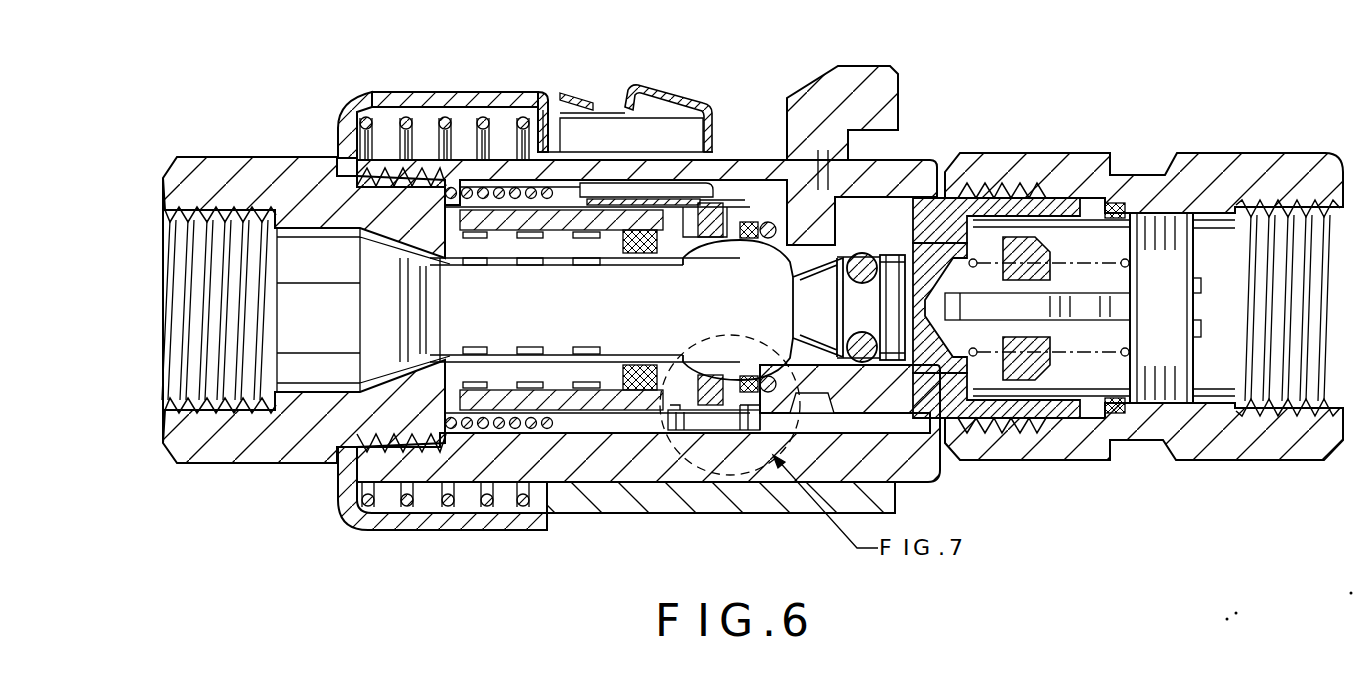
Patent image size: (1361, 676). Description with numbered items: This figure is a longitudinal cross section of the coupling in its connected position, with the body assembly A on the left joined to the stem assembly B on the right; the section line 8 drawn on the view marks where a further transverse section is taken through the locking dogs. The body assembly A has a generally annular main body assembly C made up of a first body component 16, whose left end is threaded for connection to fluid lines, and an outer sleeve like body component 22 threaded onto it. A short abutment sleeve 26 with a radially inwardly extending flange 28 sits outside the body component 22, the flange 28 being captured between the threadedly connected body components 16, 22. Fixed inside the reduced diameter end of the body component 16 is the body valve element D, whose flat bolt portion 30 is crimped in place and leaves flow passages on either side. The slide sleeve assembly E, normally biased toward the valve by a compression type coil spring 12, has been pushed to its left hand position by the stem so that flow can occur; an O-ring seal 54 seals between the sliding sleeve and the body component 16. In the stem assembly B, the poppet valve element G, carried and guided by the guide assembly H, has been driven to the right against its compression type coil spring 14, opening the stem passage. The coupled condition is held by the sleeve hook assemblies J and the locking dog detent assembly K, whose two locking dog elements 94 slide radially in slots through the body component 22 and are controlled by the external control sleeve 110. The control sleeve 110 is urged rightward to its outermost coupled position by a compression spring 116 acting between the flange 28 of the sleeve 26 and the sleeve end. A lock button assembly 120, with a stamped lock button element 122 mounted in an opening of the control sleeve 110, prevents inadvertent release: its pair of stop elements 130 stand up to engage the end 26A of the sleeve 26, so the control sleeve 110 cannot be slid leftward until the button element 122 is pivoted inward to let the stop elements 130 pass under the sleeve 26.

The first body component 16 is at (235, 442).
The bolt portion 30 is at (450, 305).
The body assembly A is at (429, 91).
The radially inwardly extending flange 28 is at (345, 138).
The abutment sleeve 26 is at (447, 92).
The end of sleeve 26A is at (550, 97).
The compression spring 116 is at (410, 123).
The main body assembly C is at (326, 473).
The outer sleeve like body component 22 is at (903, 467).
The external control sleeve 110 is at (785, 96).
The locking dog elements 94 is at (823, 150).
The section line 8- 8 is at (812, 190).
The locking dog detent assembly K is at (848, 180).
The lock button assembly 120 is at (637, 80).
The stop elements 130 is at (572, 103).
The lock button element 122 is at (658, 103).
The O-ring seal 54 is at (715, 190).
The compression type coil spring 12 is at (512, 413).
The slide sleeve assembly E is at (672, 272).
The sleeve hook assemblies J is at (695, 445).
The stem assembly B is at (1168, 140).
The body valve element D is at (952, 192).
The compression type coil spring 14 is at (1120, 346).
The poppet valve element G is at (1060, 249).
The guide assembly H is at (1163, 357).